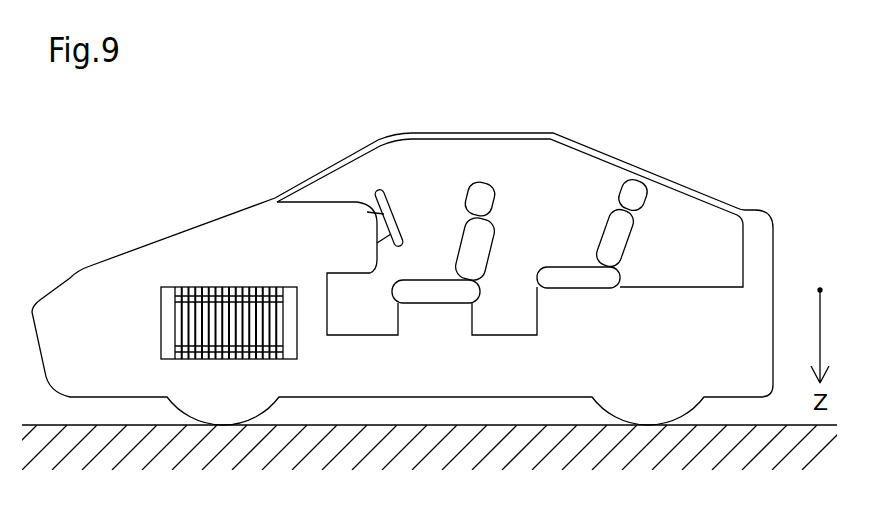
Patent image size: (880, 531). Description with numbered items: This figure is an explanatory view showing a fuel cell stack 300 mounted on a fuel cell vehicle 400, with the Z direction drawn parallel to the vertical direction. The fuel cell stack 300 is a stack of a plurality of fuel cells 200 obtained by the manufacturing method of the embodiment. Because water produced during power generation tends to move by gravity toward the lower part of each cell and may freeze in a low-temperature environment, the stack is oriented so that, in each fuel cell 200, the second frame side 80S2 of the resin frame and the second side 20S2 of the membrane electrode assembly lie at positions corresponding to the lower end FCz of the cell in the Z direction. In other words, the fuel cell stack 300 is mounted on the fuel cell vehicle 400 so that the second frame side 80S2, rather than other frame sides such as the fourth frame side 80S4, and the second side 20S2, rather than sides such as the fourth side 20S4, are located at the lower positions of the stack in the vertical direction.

The fuel cell vehicle 400 is at (598, 147).
The fuel cell 200 is at (212, 287).
The fuel cell stack 300 is at (280, 264).
The second frame side 80S2 is at (173, 333).
The second side 20S2 is at (175, 360).
The fourth frame side 80S4 is at (288, 288).
The fourth side 20S4 is at (284, 304).
The lower end FCz is at (197, 359).